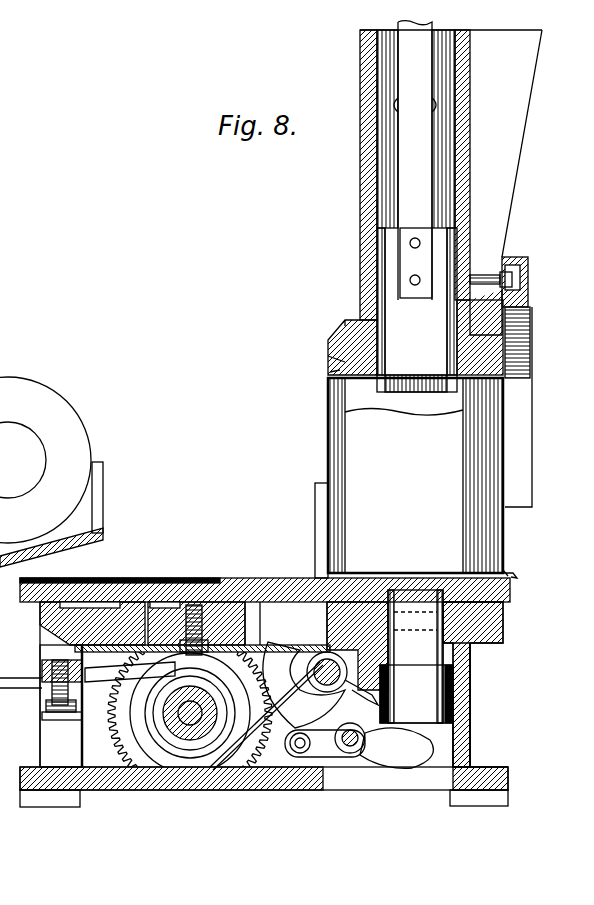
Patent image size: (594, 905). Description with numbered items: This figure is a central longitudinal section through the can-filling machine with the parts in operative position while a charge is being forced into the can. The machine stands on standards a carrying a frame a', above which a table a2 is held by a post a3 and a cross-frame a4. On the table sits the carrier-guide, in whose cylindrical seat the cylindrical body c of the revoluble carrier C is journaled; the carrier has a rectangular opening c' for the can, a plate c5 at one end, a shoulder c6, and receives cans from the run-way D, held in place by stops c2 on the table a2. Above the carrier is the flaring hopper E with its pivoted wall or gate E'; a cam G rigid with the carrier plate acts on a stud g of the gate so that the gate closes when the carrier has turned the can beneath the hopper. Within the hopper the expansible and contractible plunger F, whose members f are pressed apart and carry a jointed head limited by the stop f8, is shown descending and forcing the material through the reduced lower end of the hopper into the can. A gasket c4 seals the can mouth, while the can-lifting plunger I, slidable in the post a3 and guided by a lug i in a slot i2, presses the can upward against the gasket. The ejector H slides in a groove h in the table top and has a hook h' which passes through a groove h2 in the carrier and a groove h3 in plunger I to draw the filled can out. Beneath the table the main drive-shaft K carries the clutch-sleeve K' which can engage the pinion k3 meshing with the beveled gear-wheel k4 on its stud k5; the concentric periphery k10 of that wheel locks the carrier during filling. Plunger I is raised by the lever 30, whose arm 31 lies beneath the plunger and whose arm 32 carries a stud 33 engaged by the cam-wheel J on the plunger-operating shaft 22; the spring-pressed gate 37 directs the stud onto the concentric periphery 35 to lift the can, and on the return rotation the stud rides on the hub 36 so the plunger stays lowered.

The hopper E is at (434, 175).
The movable wall or gate E' is at (508, 143).
The expansible and contractible plunger F is at (415, 160).
The plunger-member f is at (417, 301).
The stop f8 is at (417, 387).
The package-holder or carrier C is at (328, 342).
The ports c6 is at (345, 326).
The cylindrical body c is at (292, 366).
The gasket c4 is at (330, 372).
The cam G is at (516, 258).
The stud g is at (508, 264).
The rectangular opening c' is at (521, 312).
The plate c5 is at (530, 328).
The stops c2 is at (316, 500).
The groove h3 is at (440, 570).
The groove h2 is at (505, 570).
The hook h' is at (526, 563).
The track or run-way D is at (96, 522).
The ejector H is at (244, 578).
The beveled gear-wheel k4 is at (114, 578).
The stud k5 is at (164, 578).
The groove h is at (194, 597).
The concentric periphery k10 is at (273, 578).
The plunger I is at (445, 676).
The post a3 is at (472, 660).
The lug i is at (440, 702).
The slot i2 is at (472, 728).
The standards a is at (281, 783).
The frame a' is at (489, 753).
The table a2 is at (40, 605).
The cross-frame a4 is at (42, 735).
The pinion k3 is at (128, 705).
The clutch sleeve K' is at (160, 710).
The main drive-shaft K is at (190, 721).
The plunger-operating shaft 22 is at (195, 730).
The cam-wheel J is at (304, 685).
The hub 36 is at (327, 686).
The spring-pressed gate 37 is at (360, 700).
The stud 33 is at (300, 755).
The concentric sectional-periphery 35 is at (286, 747).
The arm 32 is at (325, 743).
The lever 30 is at (348, 752).
The arm 31 is at (396, 748).